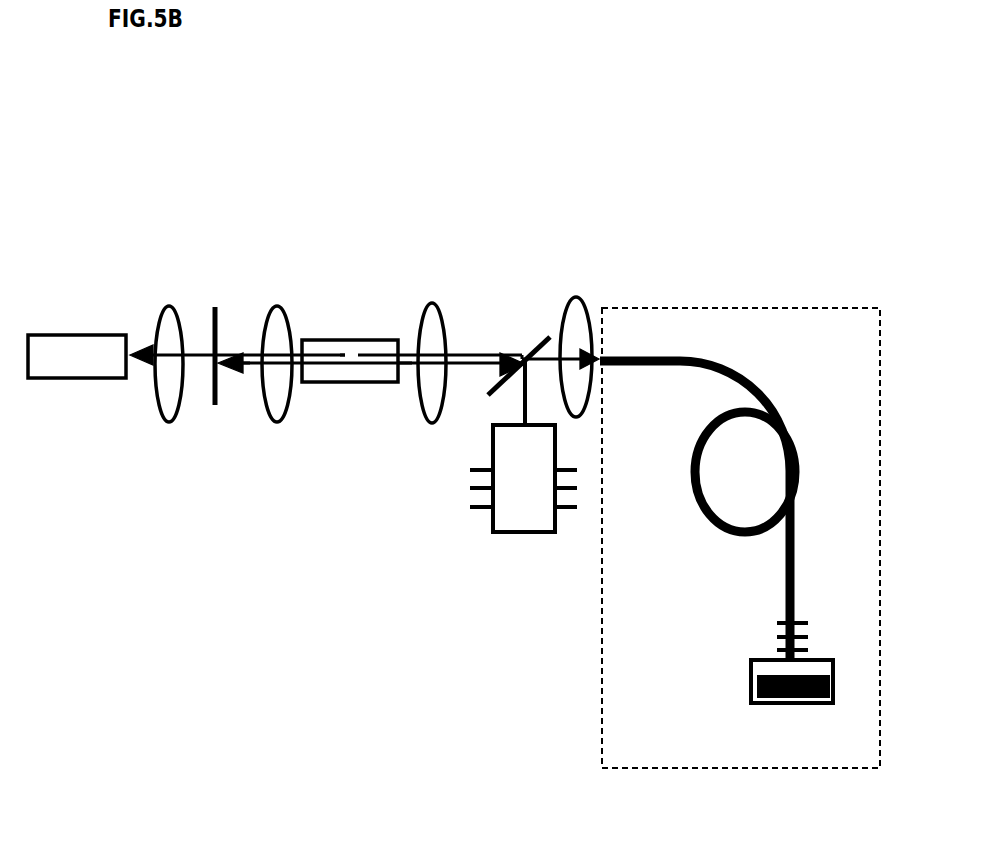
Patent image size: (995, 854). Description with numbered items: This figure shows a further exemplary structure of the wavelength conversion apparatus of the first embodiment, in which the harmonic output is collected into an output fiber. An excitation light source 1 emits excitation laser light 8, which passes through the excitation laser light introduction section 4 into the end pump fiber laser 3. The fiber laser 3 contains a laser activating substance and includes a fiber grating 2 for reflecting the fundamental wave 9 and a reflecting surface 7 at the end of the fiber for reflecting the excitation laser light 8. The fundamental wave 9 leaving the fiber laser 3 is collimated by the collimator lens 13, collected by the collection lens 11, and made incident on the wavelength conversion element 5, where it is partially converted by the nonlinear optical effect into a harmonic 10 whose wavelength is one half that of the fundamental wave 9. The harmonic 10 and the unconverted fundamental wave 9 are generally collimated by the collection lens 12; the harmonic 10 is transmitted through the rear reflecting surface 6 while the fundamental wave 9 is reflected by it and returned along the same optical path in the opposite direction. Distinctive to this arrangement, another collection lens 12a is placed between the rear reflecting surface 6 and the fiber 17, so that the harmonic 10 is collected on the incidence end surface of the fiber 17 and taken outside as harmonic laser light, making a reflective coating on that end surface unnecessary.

The excitation light source 1 is at (478, 538).
The fiber grating 2 is at (824, 625).
The end pump fiber laser 3 is at (739, 300).
The excitation laser light introduction section 4 is at (513, 330).
The wavelength conversion element 5 is at (372, 324).
The rear reflecting surface 6 is at (216, 284).
The reflecting surface 7 is at (820, 705).
The excitation laser light 8 is at (506, 411).
The fundamental wave 9 is at (399, 380).
The harmonic 10 is at (352, 342).
The collection lens 11 is at (426, 286).
The collection lens 12 is at (270, 440).
The collection lens 12a is at (167, 438).
The collimator lens 13 is at (580, 285).
The fiber 17 is at (72, 394).